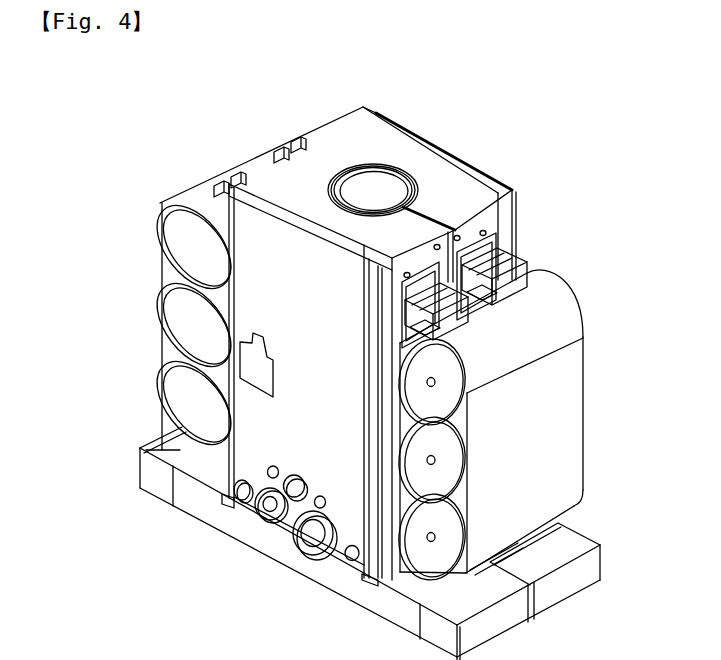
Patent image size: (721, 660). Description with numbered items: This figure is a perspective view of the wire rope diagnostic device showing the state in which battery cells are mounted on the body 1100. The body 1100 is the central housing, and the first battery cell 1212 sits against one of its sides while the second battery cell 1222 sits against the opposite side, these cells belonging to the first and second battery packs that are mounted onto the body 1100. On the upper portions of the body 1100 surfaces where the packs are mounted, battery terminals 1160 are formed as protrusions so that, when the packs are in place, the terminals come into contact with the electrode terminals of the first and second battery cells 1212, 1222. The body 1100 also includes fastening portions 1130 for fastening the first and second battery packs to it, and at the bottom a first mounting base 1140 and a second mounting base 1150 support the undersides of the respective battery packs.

The body 1100 is at (442, 152).
The fastening portions 1130 is at (482, 235).
The battery terminals 1160 is at (512, 253).
The first battery cell 1212 is at (177, 313).
The second battery cell 1222 is at (578, 407).
The first mounting base 1140 is at (140, 449).
The second mounting base 1150 is at (572, 548).